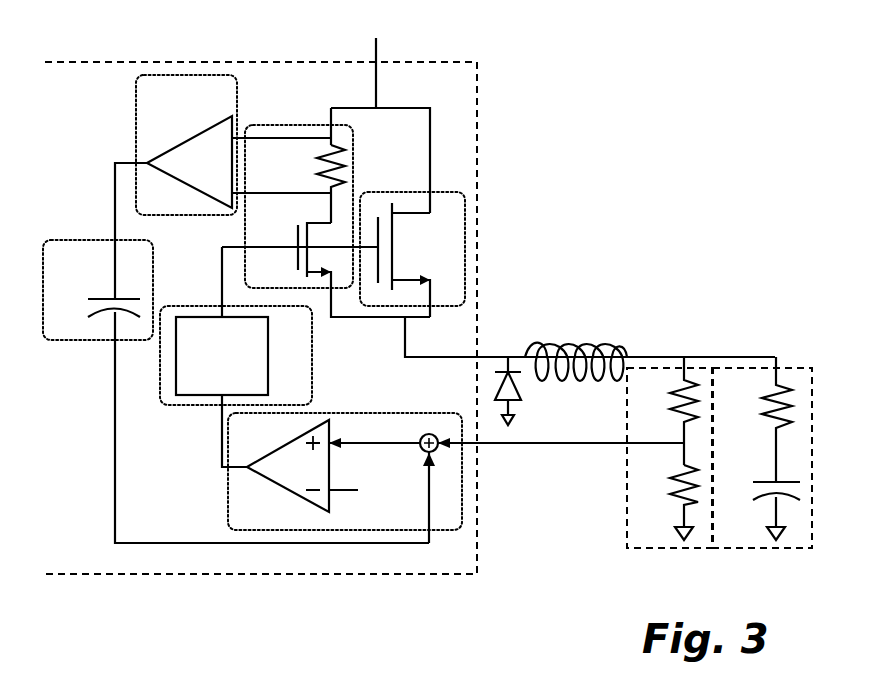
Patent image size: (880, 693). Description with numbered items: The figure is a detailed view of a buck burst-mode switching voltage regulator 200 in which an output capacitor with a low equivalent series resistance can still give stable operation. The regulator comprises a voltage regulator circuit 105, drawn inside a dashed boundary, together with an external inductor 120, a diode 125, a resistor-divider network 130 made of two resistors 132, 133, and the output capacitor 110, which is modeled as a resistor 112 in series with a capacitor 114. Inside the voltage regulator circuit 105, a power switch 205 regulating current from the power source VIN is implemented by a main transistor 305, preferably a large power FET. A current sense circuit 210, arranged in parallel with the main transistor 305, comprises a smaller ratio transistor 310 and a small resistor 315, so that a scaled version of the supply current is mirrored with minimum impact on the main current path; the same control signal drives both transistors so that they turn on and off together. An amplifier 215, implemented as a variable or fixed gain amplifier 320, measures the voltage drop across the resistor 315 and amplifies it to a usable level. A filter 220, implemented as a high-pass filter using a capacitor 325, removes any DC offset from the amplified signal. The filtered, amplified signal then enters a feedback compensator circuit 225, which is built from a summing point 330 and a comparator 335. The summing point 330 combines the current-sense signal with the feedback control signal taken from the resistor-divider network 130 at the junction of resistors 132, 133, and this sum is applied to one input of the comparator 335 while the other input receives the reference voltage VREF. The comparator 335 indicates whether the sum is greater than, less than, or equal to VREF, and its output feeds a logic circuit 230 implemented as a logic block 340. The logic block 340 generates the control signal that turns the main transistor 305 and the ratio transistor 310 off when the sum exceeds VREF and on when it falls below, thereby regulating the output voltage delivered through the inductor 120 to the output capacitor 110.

The buck burst-mode switching voltage regulator 200 is at (678, 68).
The voltage regulator circuit 105 is at (122, 63).
The power switch 205 is at (412, 192).
The amplifier 215 is at (137, 132).
The gain amplifier 320 is at (197, 135).
The filter 220 is at (77, 240).
The capacitor 325 is at (93, 305).
The current sense circuit 210 is at (287, 127).
The resistor 315 is at (315, 168).
The ratio transistor 310 is at (298, 243).
The main transistor 305 is at (395, 247).
The logic circuit 230 is at (313, 347).
The logic block 340 is at (270, 358).
The feedback compensator circuit 225 is at (227, 505).
The comparator 335 is at (273, 483).
The summing point 330 is at (422, 452).
The diode 125 is at (523, 392).
The inductor 120 is at (565, 338).
The resistor-divider network 130 is at (628, 548).
The feedback resistor 132 is at (670, 397).
The feedback resistor 133 is at (670, 483).
The output capacitor 110 is at (782, 550).
The resistor 112 is at (762, 405).
The capacitor 114 is at (752, 492).